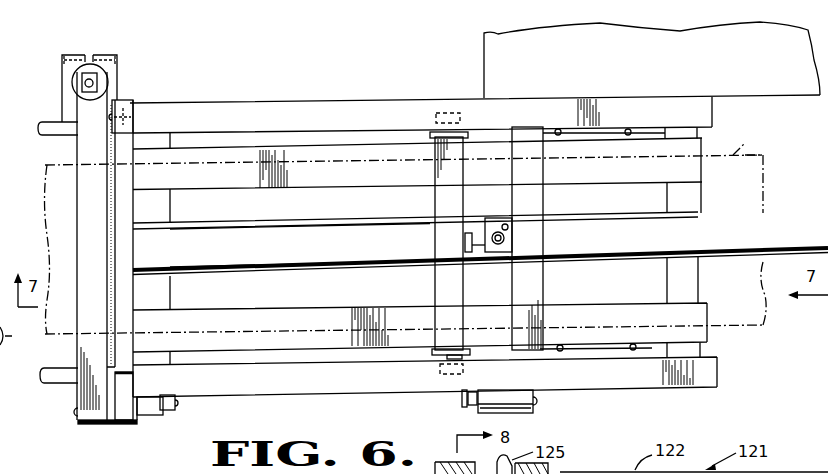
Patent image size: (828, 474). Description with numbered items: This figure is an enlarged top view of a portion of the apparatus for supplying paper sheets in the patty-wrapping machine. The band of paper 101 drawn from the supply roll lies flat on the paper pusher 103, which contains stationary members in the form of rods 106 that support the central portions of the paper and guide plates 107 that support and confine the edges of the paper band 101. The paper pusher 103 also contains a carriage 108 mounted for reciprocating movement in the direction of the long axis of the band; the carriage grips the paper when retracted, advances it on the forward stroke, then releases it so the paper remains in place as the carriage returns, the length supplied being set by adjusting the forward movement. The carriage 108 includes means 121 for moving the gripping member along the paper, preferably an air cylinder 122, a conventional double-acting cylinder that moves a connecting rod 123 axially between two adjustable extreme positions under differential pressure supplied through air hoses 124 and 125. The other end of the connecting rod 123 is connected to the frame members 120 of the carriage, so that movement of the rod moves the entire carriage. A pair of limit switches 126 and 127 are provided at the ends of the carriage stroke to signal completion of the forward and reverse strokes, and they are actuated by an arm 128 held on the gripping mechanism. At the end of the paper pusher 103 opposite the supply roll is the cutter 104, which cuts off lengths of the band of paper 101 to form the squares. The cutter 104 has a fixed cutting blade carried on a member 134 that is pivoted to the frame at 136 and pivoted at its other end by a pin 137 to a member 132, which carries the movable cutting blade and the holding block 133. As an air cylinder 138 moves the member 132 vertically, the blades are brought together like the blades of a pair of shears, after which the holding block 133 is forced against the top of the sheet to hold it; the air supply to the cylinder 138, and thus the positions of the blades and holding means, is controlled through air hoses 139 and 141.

The band of paper 101 is at (740, 153).
The paper pusher 103 is at (383, 94).
The cutter 104 is at (76, 337).
The rods 106 is at (277, 267).
The guide plates 107 is at (328, 178).
The carriage 108 is at (430, 201).
The frame members 120 is at (435, 133).
The means for moving the gripping member 121 is at (738, 333).
The air cylinder 122 is at (742, 222).
The connecting rod 123 is at (475, 252).
The air hose 124 is at (480, 232).
The air hose 125 is at (512, 235).
The limit switch 126 is at (152, 415).
The limit switch 127 is at (536, 408).
The arm 128 is at (460, 400).
The member 132 is at (97, 424).
The holding block 133 is at (110, 273).
The member 134 is at (127, 422).
The pivot 136 is at (123, 110).
The pin 137 is at (74, 412).
The air cylinder 138 is at (72, 86).
The air hose 139 is at (95, 79).
The air hose 141 is at (88, 58).